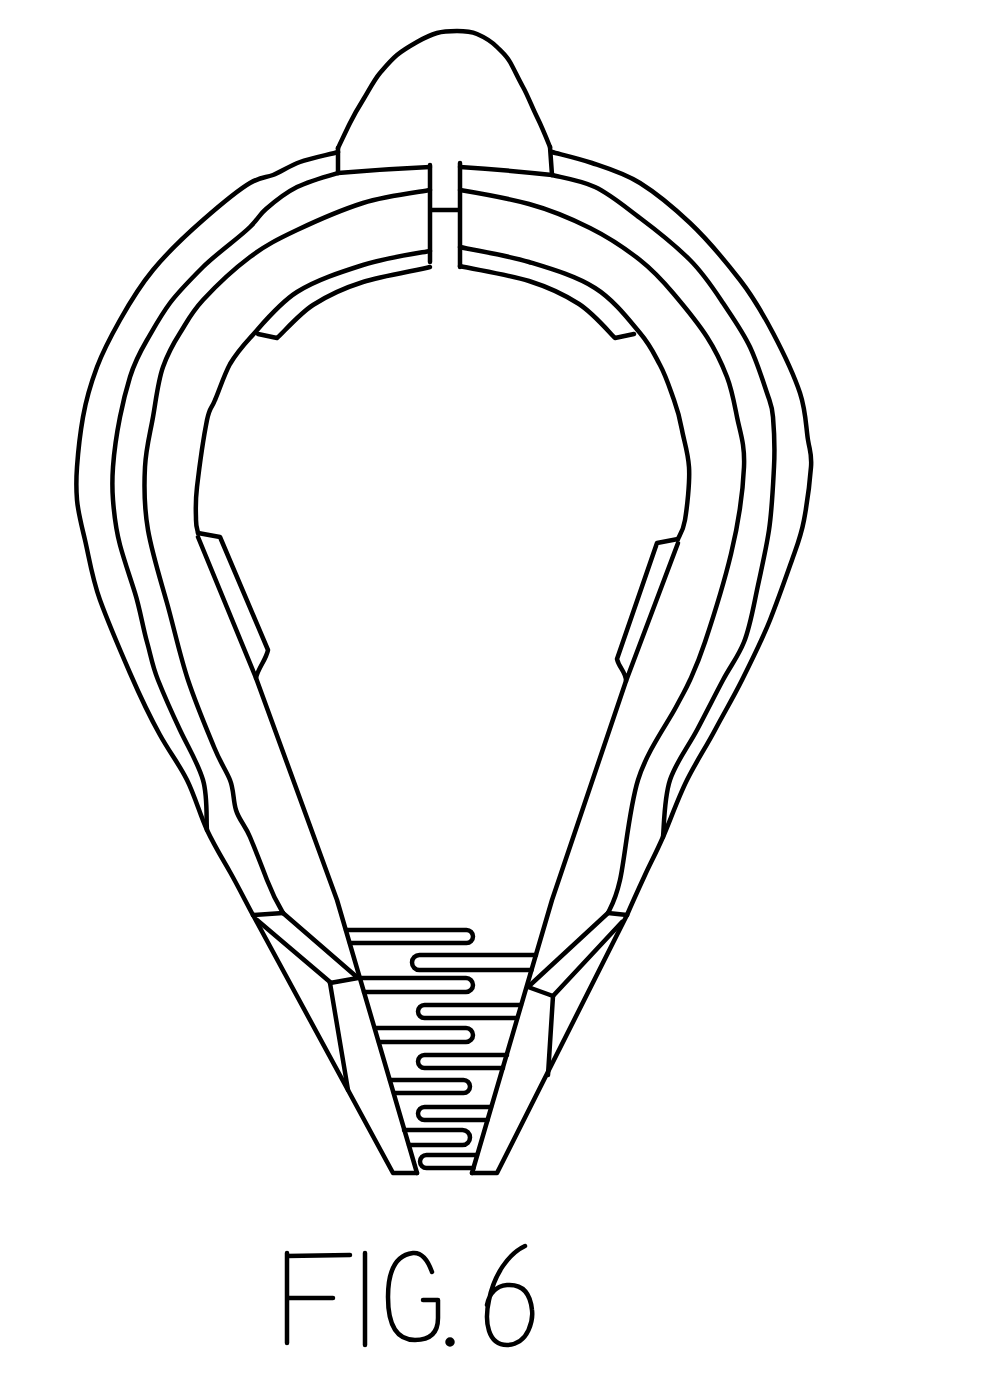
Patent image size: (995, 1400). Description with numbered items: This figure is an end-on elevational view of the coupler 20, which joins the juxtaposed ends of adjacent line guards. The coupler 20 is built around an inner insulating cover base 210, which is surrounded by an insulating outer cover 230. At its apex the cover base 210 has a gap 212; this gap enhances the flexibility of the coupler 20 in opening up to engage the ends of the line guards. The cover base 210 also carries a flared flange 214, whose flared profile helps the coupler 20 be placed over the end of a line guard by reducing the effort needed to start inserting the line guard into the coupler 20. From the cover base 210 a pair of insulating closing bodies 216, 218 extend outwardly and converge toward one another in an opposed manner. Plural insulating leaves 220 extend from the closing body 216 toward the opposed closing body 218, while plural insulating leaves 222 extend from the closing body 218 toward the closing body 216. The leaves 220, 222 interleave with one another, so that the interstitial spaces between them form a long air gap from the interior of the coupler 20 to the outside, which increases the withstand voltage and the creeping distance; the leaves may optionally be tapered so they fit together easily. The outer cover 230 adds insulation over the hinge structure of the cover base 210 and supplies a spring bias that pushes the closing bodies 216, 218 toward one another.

The coupler 20 is at (243, 76).
The insulating outer cover 230 is at (670, 221).
The gap 212 is at (445, 238).
The inner insulating cover base 210 is at (209, 419).
The flared flange 214 is at (688, 370).
The insulating closing body 218 is at (322, 1008).
The insulating closing body 216 is at (572, 997).
The insulating leaves 222 is at (410, 928).
The insulating leaves 220 is at (510, 953).